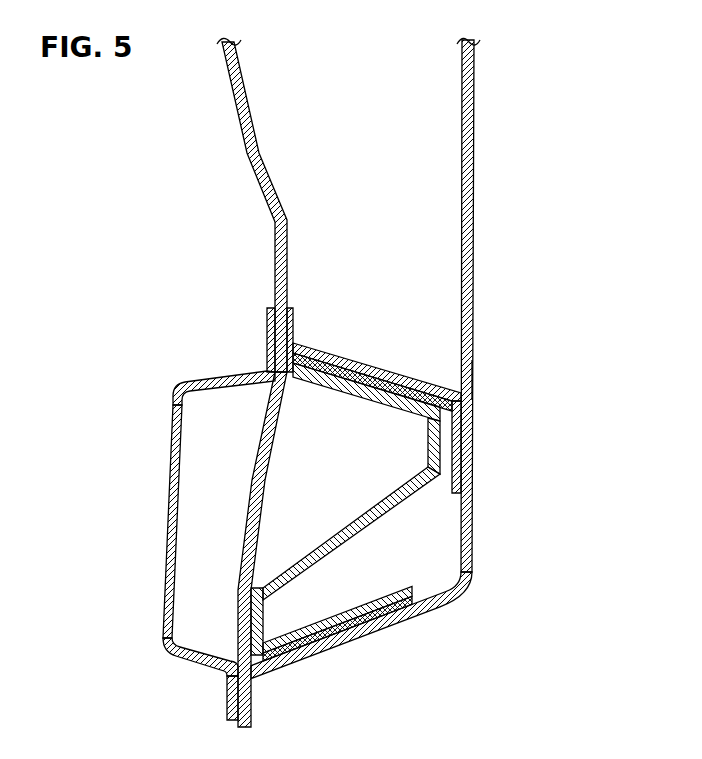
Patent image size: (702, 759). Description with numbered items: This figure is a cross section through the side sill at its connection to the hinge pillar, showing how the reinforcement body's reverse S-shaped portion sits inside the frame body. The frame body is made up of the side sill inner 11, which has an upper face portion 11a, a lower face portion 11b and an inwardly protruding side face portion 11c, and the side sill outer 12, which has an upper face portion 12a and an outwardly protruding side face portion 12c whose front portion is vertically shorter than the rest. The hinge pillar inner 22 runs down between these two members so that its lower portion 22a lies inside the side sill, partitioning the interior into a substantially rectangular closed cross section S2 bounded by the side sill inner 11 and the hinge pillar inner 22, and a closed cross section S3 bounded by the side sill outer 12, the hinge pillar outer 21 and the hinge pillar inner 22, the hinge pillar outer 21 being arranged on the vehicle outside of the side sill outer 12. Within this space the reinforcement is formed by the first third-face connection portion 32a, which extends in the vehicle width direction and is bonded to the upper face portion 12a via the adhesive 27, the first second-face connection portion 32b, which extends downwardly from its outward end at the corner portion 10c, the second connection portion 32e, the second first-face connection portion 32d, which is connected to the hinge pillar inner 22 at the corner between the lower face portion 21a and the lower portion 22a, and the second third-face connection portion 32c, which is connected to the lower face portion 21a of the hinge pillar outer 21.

The corner portion 10c is at (473, 380).
The side sill inner 11 is at (152, 583).
The upper face portion 11a is at (214, 378).
The lower face portion 11b is at (192, 668).
The side face portion 11c is at (162, 622).
The side sill outer 12 is at (311, 333).
The upper face portion 12a is at (377, 364).
The side face portion 12c is at (458, 441).
The hinge pillar outer 21 is at (475, 153).
The lower face portion 21a is at (318, 656).
The hinge pillar inner 22 is at (249, 157).
The lower portion 22a is at (250, 527).
The adhesive 27 is at (436, 383).
The first third-face connection portion 32a is at (351, 390).
The first second-face connection portion 32b is at (430, 438).
The second third-face connection portion 32c is at (413, 586).
The second first-face connection portion 32d is at (267, 612).
The second connection portion 32e is at (322, 535).
The closed cross section S2 is at (197, 456).
The closed cross section S3 is at (447, 548).